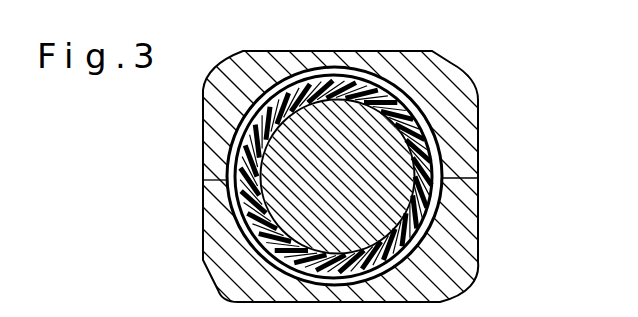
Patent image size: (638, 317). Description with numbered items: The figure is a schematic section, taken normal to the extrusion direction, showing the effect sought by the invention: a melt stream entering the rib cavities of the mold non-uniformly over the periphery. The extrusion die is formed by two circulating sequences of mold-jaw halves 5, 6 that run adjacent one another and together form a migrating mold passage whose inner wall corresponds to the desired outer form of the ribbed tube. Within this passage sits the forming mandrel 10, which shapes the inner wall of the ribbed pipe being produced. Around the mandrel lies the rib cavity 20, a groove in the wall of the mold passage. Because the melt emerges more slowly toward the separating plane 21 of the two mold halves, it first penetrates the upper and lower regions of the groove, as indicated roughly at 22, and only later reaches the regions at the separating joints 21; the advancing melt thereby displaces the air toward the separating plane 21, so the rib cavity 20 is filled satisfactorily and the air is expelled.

The mold-jaw half 5 is at (445, 78).
The mold-jaw half 6 is at (443, 258).
The forming mandrel 10 is at (339, 163).
The rib cavity 20 is at (433, 152).
The separating plane 21 is at (246, 172).
The penetrated melt 22 is at (366, 88).